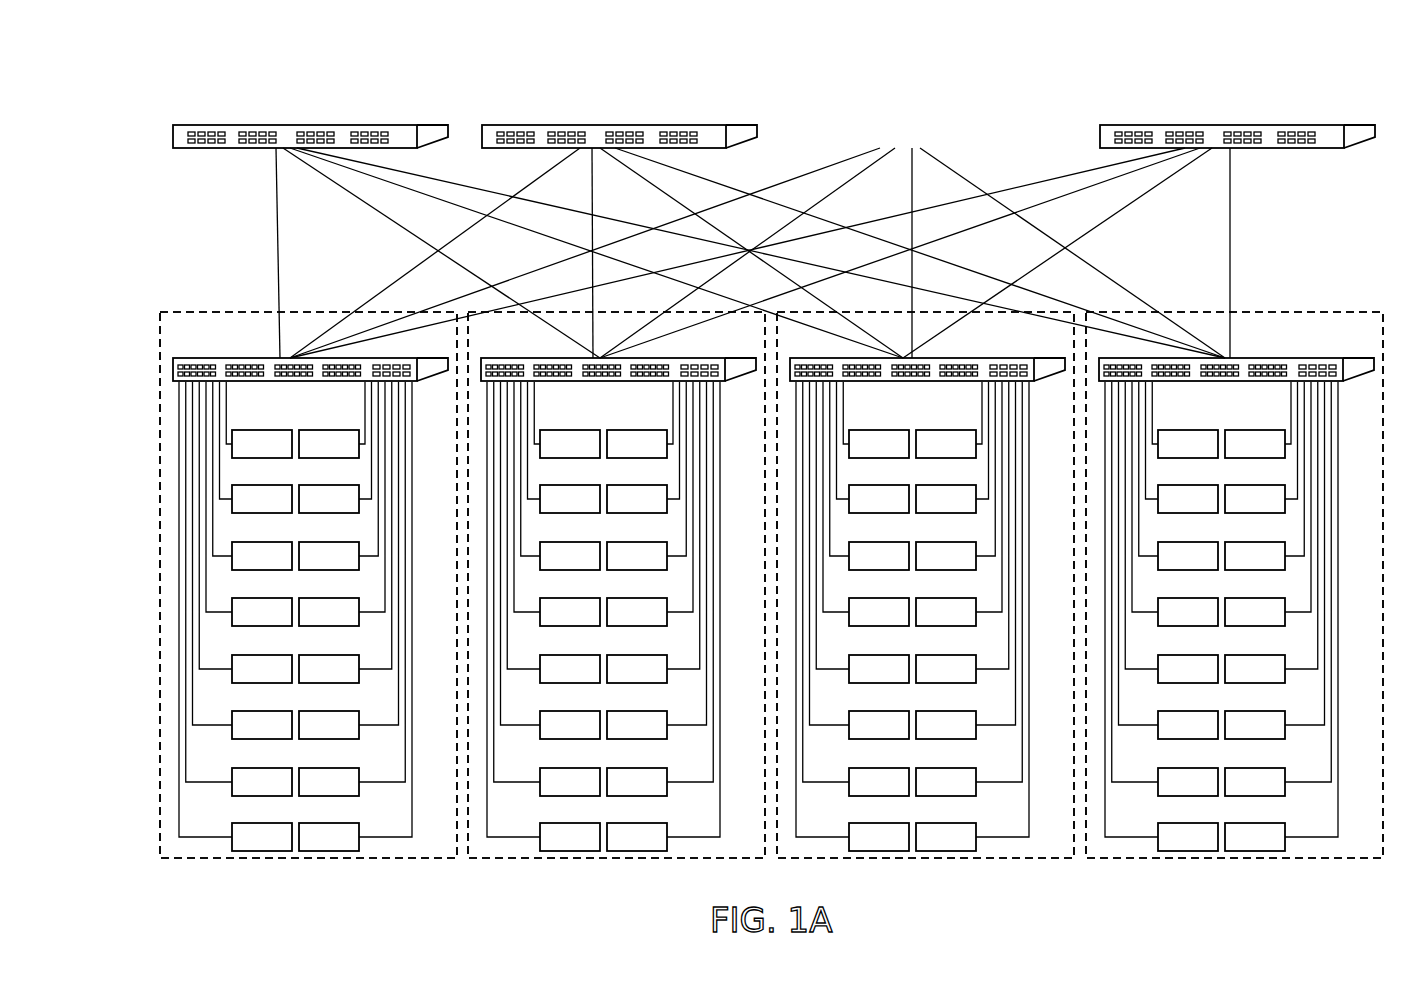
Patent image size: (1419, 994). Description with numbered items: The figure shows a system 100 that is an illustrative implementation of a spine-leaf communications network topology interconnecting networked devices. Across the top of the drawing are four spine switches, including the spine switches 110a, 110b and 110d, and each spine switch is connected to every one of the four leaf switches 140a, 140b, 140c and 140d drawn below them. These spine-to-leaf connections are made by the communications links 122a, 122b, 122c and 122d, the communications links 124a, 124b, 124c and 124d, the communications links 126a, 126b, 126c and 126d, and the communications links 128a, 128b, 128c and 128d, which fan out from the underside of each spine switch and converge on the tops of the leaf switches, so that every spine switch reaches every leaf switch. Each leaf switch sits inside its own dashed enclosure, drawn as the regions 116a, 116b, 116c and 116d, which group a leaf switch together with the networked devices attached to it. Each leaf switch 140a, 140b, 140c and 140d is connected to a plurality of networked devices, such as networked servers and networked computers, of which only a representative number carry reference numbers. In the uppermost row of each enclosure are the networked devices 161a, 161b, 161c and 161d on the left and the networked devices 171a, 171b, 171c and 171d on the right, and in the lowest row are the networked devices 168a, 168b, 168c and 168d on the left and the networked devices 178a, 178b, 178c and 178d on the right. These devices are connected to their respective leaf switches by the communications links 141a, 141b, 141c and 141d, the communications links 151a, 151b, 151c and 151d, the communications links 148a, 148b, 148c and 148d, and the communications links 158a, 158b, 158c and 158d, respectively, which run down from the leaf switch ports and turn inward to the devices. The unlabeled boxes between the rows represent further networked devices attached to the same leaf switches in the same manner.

The system 100 is at (136, 32).
The spine switch 110a is at (292, 124).
The spine switch 110b is at (768, 472).
The spine switch 110d is at (1217, 124).
The storage node 116a is at (208, 311).
The storage node 116b is at (616, 550).
The storage node 116c is at (925, 550).
The storage node 116d is at (1244, 563).
The communications link 122a is at (276, 188).
The communications link 122b is at (558, 172).
The communications link 122c is at (838, 170).
The communications link 122d is at (1112, 170).
The communications link 124a is at (343, 188).
The communications link 124b is at (590, 168).
The communications link 124c is at (882, 181).
The communications link 124d is at (1085, 190).
The communications link 126a is at (430, 194).
The communications link 126b is at (628, 166).
The communications link 126c is at (914, 168).
The communications link 126d is at (1165, 186).
The communications link 128a is at (397, 165).
The communications link 128b is at (668, 163).
The communications link 128c is at (945, 163).
The communications link 128d is at (1232, 188).
The leaf switch 140a is at (244, 357).
The leaf switch 140b is at (617, 353).
The leaf switch 140c is at (927, 353).
The leaf switch 140d is at (1236, 353).
The communications link 141a is at (226, 432).
The communications link 141b is at (565, 413).
The communications link 141c is at (874, 413).
The communications link 141d is at (1183, 413).
The communications link 151a is at (365, 432).
The communications link 151b is at (639, 413).
The communications link 151c is at (948, 413).
The communications link 151d is at (1257, 413).
The networked device 161a is at (262, 444).
The networked device 161b is at (570, 444).
The networked device 161c is at (879, 444).
The networked device 161d is at (1188, 444).
The networked device 171a is at (329, 444).
The networked device 171b is at (637, 444).
The networked device 171c is at (946, 444).
The networked device 171d is at (1255, 444).
The communications link 148a is at (179, 826).
The communications link 148b is at (519, 609).
The communications link 148c is at (827, 609).
The communications link 148d is at (1137, 609).
The communications link 158a is at (412, 826).
The communications link 158b is at (686, 609).
The communications link 158c is at (995, 609).
The communications link 158d is at (1304, 609).
The networked device 168a is at (262, 837).
The networked device 168b is at (570, 837).
The networked device 168c is at (879, 837).
The networked device 168d is at (1188, 837).
The networked device 178a is at (329, 837).
The networked device 178b is at (637, 837).
The networked device 178c is at (946, 837).
The networked device 178d is at (1255, 837).